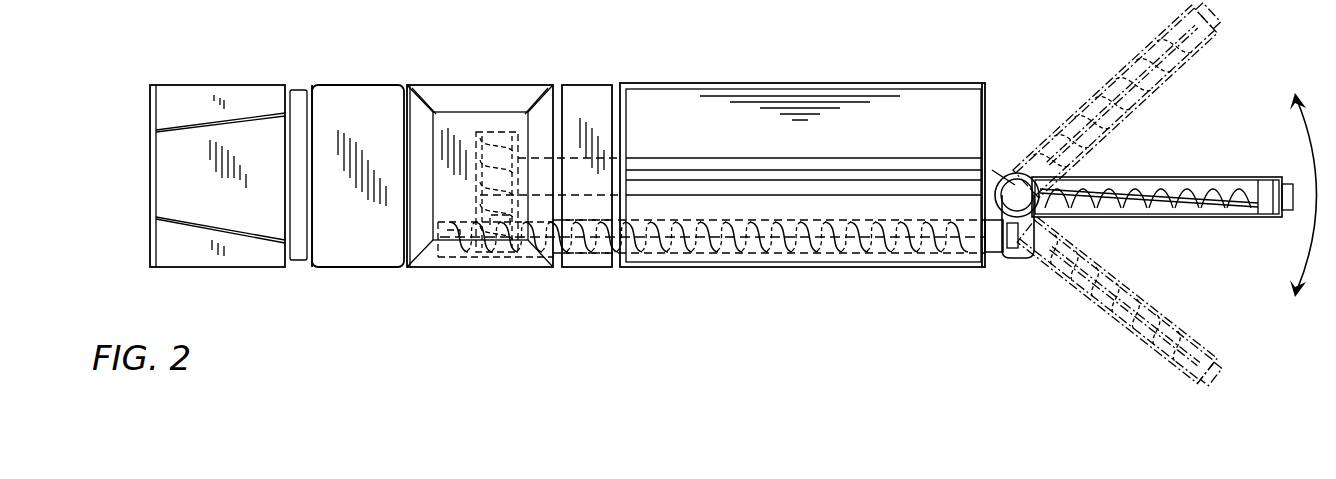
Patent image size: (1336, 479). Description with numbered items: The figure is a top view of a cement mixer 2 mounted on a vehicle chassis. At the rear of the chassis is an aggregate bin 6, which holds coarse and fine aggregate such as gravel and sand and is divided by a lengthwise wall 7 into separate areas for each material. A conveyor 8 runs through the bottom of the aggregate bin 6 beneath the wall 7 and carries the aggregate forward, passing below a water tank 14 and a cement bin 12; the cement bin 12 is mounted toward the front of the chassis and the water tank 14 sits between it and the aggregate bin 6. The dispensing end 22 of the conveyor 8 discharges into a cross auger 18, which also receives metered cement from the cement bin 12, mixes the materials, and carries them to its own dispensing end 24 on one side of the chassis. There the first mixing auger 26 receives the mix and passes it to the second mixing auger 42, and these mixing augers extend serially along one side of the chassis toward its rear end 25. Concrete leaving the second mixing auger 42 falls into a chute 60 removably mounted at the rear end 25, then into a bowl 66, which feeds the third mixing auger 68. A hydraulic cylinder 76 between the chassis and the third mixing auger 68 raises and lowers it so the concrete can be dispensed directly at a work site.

The cement mixer 2 is at (338, 75).
The aggregate bin 6 is at (680, 85).
The wall 7 is at (862, 173).
The conveyor 8 is at (708, 163).
The cement bin 12 is at (462, 85).
The water tank 14 is at (583, 90).
The cross auger 18 is at (483, 190).
The dispensing end of the conveyor 22 is at (518, 132).
The dispensing end of the cross auger 24 is at (493, 266).
The rear end of the chassis 25 is at (985, 105).
The first mixing auger 26 is at (572, 270).
The second mixing auger 42 is at (872, 256).
The chute 60 is at (1013, 260).
The bowl 66 is at (1013, 172).
The third mixing auger 68 is at (1198, 178).
The hydraulic cylinder 76 is at (1097, 180).